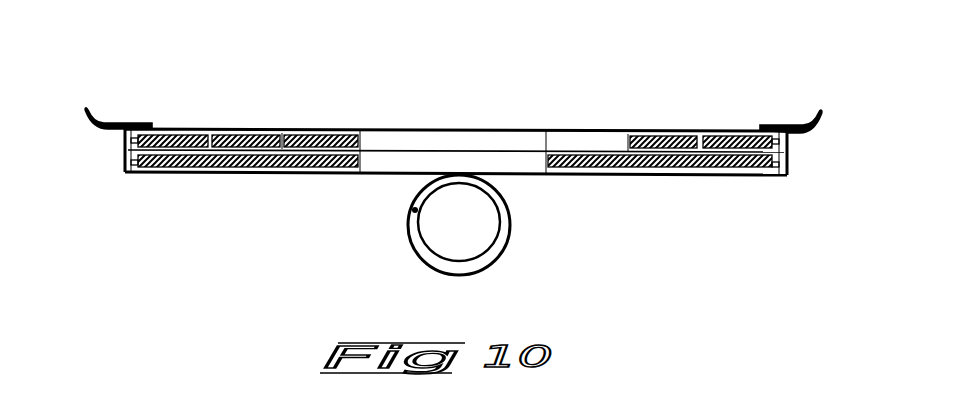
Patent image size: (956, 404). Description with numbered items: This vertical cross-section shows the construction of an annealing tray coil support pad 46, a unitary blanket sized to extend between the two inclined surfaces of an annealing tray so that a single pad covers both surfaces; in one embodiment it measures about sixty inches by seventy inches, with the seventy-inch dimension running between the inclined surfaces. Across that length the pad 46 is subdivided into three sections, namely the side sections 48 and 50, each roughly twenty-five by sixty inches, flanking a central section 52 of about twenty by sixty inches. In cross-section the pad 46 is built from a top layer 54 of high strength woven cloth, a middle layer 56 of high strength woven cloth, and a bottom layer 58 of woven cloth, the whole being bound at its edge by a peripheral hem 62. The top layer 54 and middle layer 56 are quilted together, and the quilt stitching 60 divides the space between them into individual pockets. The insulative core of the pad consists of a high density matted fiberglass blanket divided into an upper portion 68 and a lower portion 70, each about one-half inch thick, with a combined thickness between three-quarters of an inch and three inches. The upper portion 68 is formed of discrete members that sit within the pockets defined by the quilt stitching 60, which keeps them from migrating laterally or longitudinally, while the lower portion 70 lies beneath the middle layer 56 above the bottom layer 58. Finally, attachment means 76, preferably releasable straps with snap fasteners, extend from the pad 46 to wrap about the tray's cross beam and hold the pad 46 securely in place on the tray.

The annealing tray coil support pad 46 is at (561, 104).
The side section 48 is at (242, 118).
The side section 50 is at (665, 120).
The central section 52 is at (455, 116).
The top layer 54 is at (332, 130).
The middle layer 56 is at (380, 150).
The bottom layer 58 is at (198, 173).
The quilt stitching 60 is at (282, 128).
The peripheral hem 62 is at (790, 167).
The upper portion 68 is at (180, 129).
The lower portion 70 is at (273, 173).
The attachment means 76 is at (524, 256).